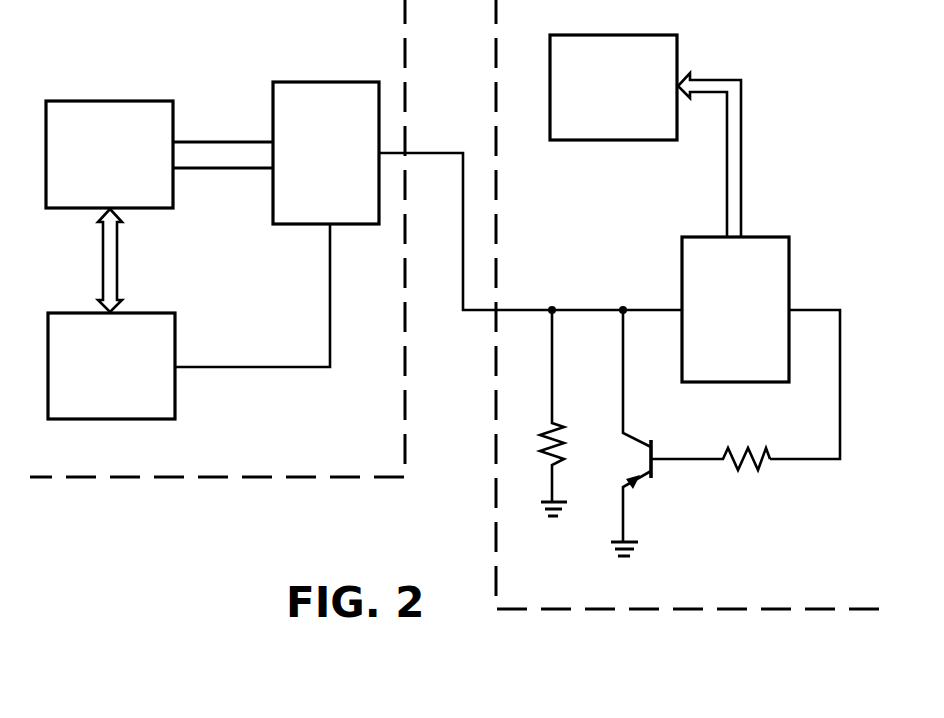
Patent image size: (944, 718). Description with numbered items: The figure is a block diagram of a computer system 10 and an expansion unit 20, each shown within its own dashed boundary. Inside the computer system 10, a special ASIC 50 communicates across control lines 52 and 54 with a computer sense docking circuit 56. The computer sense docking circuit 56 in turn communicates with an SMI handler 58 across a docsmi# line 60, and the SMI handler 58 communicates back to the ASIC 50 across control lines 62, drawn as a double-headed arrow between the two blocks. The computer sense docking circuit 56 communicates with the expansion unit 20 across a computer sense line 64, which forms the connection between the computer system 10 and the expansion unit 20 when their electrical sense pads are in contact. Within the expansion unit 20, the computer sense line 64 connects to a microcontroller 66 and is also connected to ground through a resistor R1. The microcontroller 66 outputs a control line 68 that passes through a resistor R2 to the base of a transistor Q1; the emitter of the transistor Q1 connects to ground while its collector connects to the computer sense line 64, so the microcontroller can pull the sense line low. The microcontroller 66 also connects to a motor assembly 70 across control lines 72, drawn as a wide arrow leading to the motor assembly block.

The computer system 10 is at (187, 479).
The expansion unit 20 is at (654, 611).
The ASIC 50 is at (103, 101).
The control line 52 is at (234, 142).
The control line 54 is at (234, 168).
The computer sense docking circuit 56 is at (300, 224).
The SMI handler 58 is at (175, 396).
The docsmi# line 60 is at (247, 367).
The control lines 62 is at (103, 281).
The computer sense line 64 is at (431, 153).
The microcontroller 66 is at (789, 268).
The control line 68 is at (840, 339).
The motor assembly 70 is at (613, 140).
The control lines 72 is at (741, 140).
The resistor R1 is at (557, 428).
The resistor R2 is at (748, 471).
The transistor Q1 is at (655, 465).